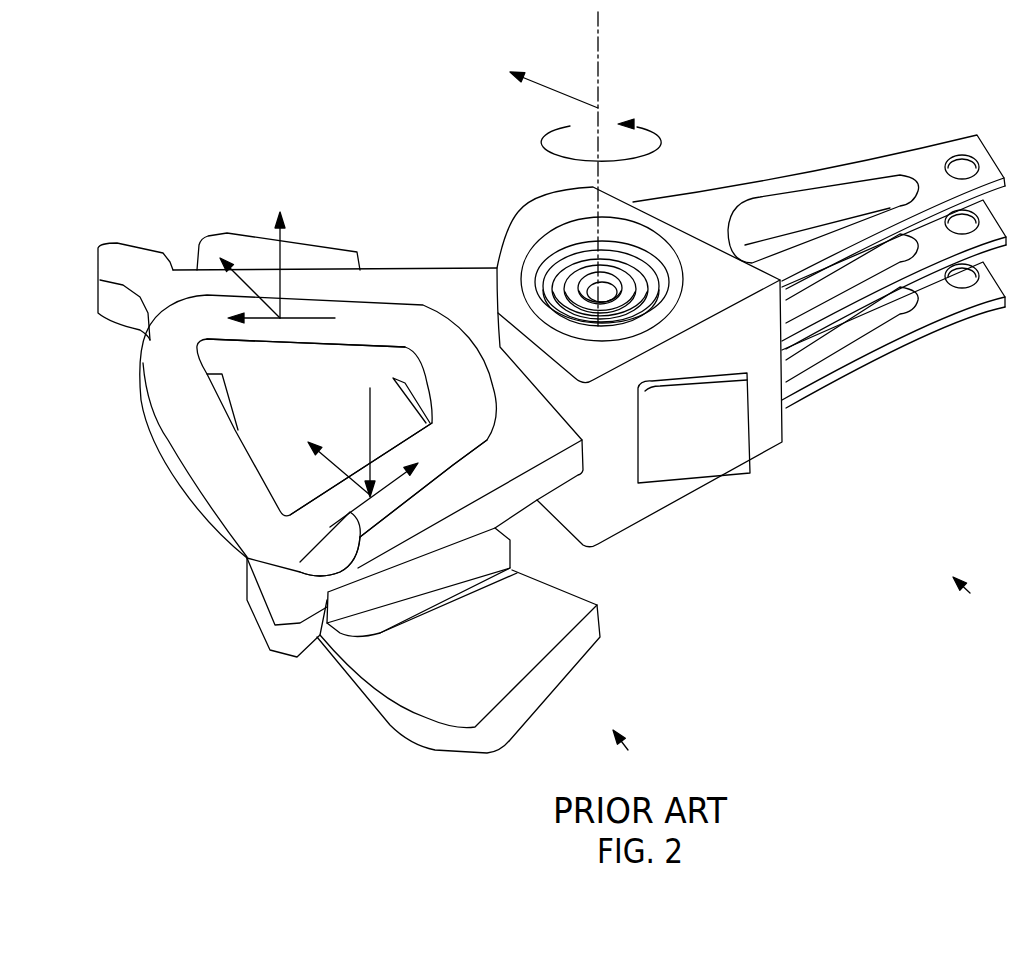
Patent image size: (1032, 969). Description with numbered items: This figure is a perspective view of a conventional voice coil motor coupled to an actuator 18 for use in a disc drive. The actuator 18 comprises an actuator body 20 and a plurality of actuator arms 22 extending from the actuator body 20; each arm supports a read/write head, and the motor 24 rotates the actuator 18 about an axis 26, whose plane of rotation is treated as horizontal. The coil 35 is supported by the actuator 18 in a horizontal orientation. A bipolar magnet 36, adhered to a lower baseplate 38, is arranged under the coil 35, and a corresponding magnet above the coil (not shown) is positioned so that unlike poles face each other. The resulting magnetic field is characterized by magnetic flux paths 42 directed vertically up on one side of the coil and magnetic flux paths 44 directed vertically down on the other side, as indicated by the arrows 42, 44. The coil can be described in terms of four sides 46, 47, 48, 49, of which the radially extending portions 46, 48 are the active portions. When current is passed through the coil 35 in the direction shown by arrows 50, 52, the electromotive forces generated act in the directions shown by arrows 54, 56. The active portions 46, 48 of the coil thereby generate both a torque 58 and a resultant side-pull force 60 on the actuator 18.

The actuator 18 is at (970, 593).
The actuator body 20 is at (760, 443).
The actuator arms 22 is at (883, 160).
The motor 24 is at (628, 750).
The axis 26 is at (598, 62).
The coil 35 is at (173, 470).
The bipolar magnet 36 is at (418, 622).
The lower baseplate 38 is at (400, 718).
The magnetic flux paths 42 is at (290, 255).
The magnetic flux paths 44 is at (370, 438).
The side of coil 46 is at (367, 313).
The side of coil 47 is at (223, 497).
The side of coil 48 is at (433, 470).
The side of coil 49 is at (450, 373).
The arrow 50 is at (317, 318).
The arrow 52 is at (340, 580).
The arrow 54 is at (245, 300).
The arrow 56 is at (343, 474).
The torque 58 is at (664, 142).
The side-pull force 60 is at (552, 88).